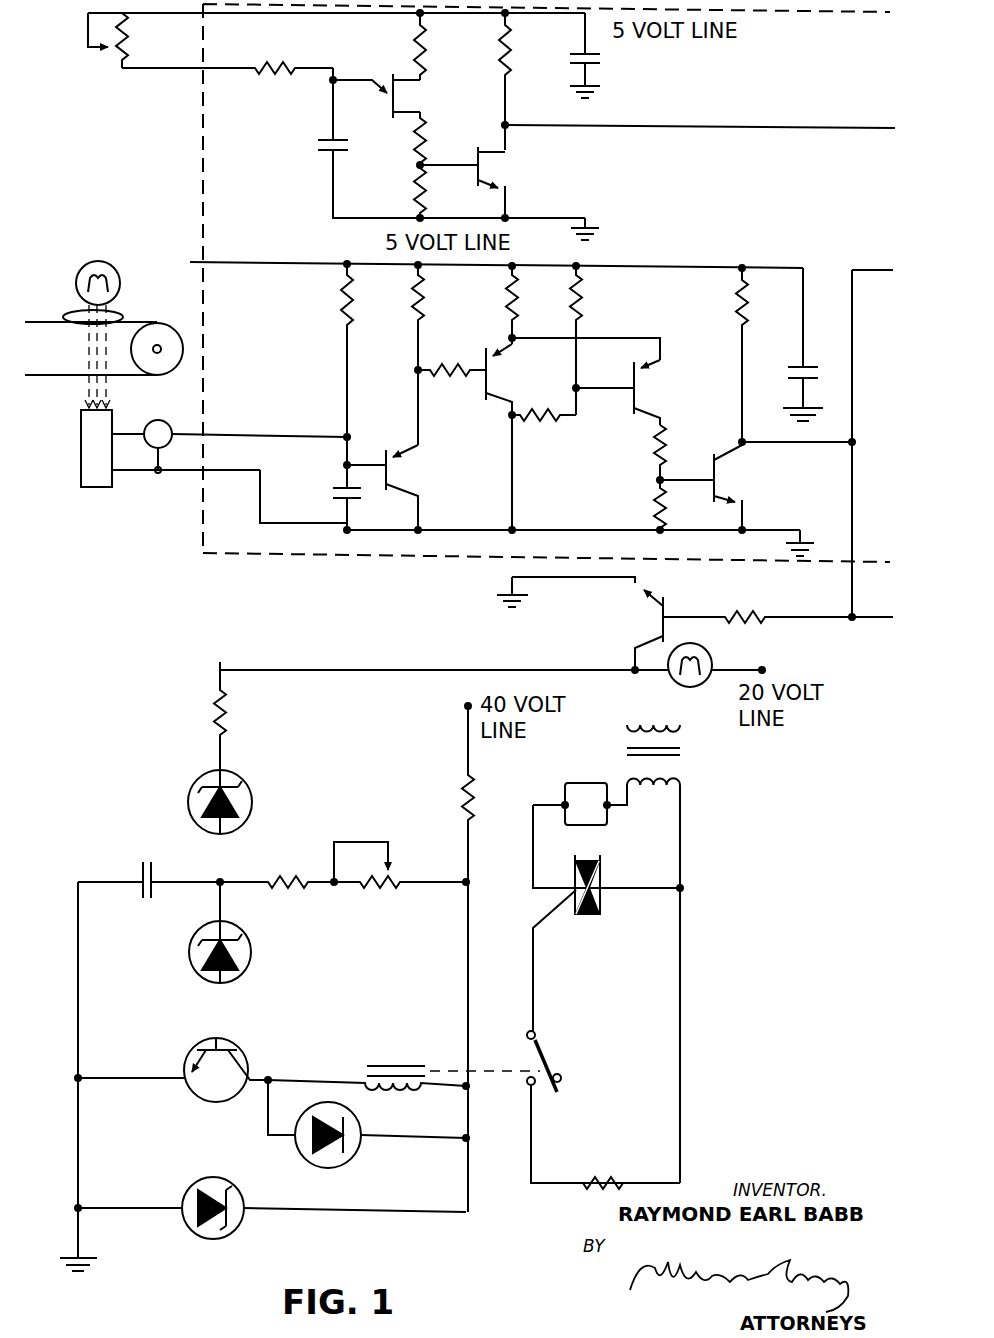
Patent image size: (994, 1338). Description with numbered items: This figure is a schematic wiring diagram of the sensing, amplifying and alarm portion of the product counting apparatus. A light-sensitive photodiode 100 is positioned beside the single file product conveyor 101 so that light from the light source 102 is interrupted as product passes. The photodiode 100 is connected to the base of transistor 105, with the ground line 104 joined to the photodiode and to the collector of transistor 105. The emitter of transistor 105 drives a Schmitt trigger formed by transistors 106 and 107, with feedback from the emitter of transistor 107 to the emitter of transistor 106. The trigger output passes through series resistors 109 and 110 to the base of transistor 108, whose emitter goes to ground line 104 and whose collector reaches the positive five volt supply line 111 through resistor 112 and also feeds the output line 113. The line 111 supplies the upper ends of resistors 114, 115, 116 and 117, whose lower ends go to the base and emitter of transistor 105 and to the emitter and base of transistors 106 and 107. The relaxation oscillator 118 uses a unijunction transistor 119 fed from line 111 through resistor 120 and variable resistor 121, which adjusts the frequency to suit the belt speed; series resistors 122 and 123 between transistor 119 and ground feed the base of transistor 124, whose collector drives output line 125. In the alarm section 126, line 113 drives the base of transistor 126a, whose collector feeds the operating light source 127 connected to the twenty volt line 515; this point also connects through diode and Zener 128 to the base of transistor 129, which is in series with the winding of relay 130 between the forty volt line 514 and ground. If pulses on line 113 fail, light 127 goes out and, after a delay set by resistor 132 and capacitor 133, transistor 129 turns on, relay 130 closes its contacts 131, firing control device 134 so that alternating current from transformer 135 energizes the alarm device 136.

The photodiode 100 is at (104, 488).
The single file product conveyor 101 is at (134, 322).
The light source 102 is at (120, 280).
The ground line 104 is at (585, 218).
The transistor 105 is at (390, 452).
The transistor 106 is at (486, 388).
The transistor 107 is at (636, 404).
The transistor 108 is at (712, 466).
The resistor 109 is at (652, 446).
The resistor 110 is at (654, 500).
The positive 5 volt supply line 111 is at (376, 18).
The resistor 112 is at (738, 308).
The output line 113 is at (812, 442).
The resistor 114 is at (344, 305).
The resistor 115 is at (416, 306).
The resistor 116 is at (510, 312).
The resistor 117 is at (574, 306).
The relaxation oscillator 118 is at (318, 180).
The unijunction transistor 119 is at (397, 107).
The resistor 120 is at (284, 74).
The variable resistor 121 is at (124, 52).
The resistor 122 is at (430, 148).
The resistor 123 is at (414, 180).
The transistor 124 is at (490, 174).
The output line 125 is at (650, 127).
The transistor 126 is at (362, 719).
The transistor 126a is at (667, 604).
The operating light source 127 is at (682, 684).
The diode and Zener 128 is at (250, 790).
The transistor 129 is at (246, 1058).
The relay 130 is at (370, 1064).
The relay contacts 131 is at (545, 1062).
The resistor 132 is at (404, 882).
The capacitor 133 is at (146, 862).
The control device 134 is at (578, 918).
The transformer 135 is at (652, 788).
The alarm device 136 is at (596, 782).
The 40 volt line 514 is at (466, 754).
The 20 volt line 515 is at (760, 660).